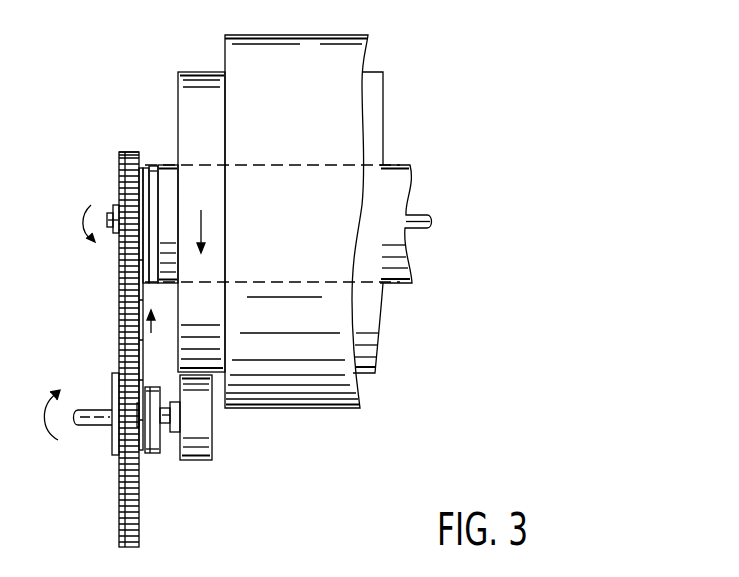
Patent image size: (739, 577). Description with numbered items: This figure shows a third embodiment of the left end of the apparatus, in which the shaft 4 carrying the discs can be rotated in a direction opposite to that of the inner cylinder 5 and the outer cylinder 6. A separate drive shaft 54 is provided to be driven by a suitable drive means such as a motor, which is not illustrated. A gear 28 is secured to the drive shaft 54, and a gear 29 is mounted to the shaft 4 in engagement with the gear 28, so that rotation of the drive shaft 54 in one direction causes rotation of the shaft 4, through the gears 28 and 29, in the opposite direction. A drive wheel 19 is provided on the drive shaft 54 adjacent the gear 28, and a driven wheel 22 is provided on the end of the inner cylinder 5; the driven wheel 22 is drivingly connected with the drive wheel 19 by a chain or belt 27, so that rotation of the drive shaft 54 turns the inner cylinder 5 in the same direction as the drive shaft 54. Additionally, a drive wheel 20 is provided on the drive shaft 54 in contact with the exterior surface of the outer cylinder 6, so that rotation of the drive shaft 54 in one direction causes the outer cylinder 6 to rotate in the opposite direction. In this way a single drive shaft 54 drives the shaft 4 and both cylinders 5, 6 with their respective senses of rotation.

The shaft 4 is at (111, 213).
The inner cylinder 5 is at (165, 165).
The outer cylinder 6 is at (190, 72).
The drive wheel 19 is at (160, 449).
The drive wheel 20 is at (210, 447).
The driven wheel 22 is at (123, 263).
The chain or belt 27 is at (138, 323).
The gear 28 is at (120, 523).
The gear 29 is at (120, 167).
The drive shaft 54 is at (85, 427).